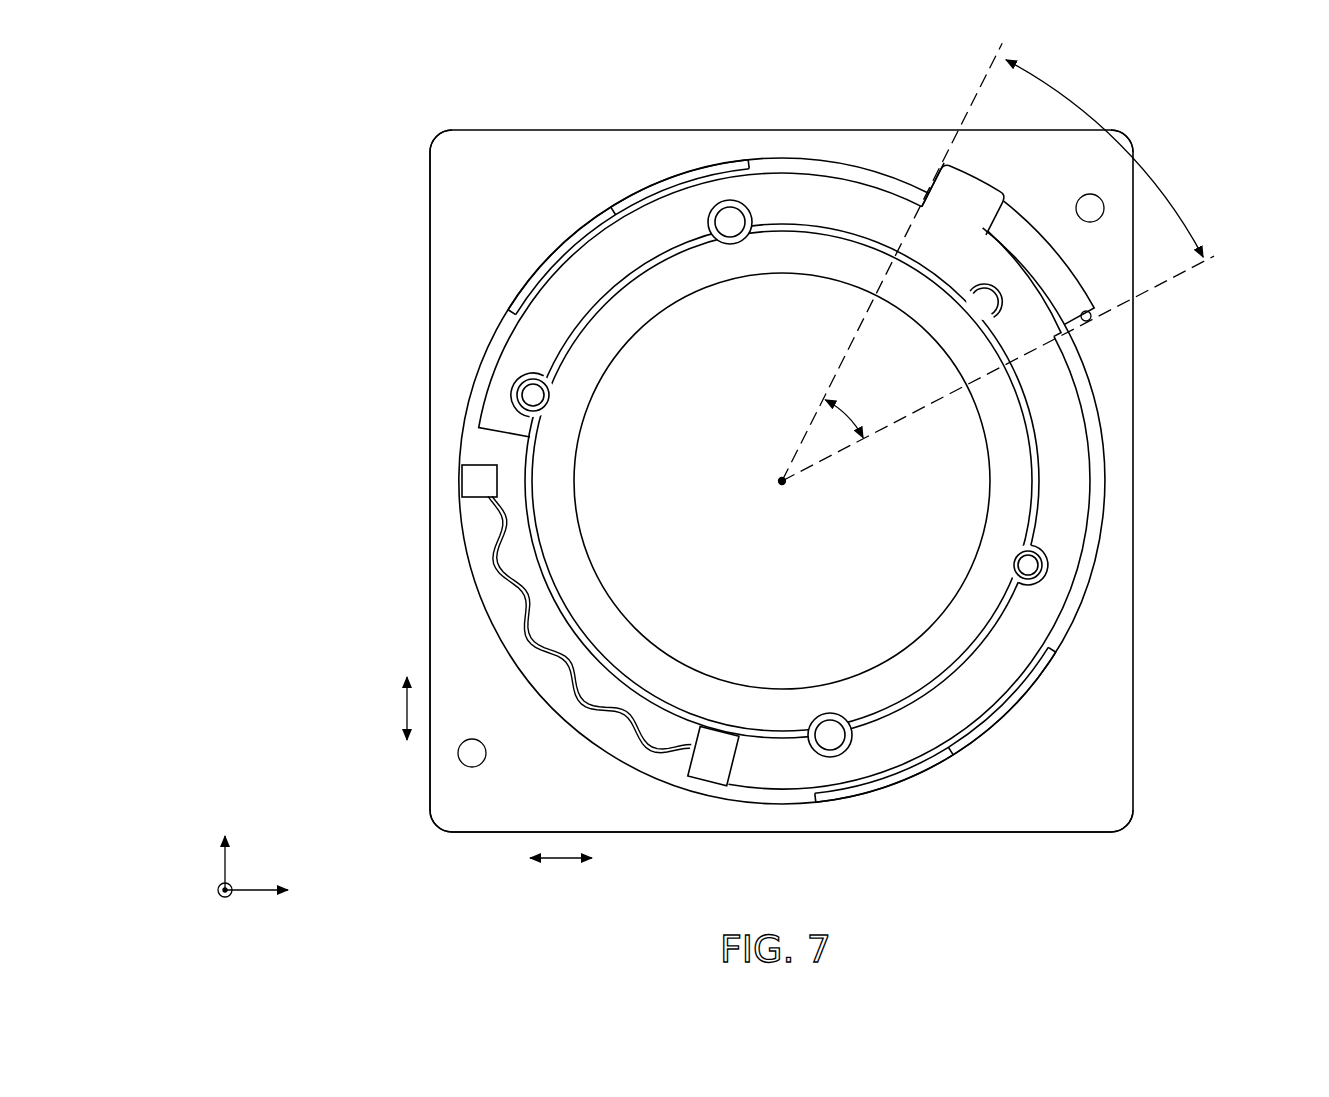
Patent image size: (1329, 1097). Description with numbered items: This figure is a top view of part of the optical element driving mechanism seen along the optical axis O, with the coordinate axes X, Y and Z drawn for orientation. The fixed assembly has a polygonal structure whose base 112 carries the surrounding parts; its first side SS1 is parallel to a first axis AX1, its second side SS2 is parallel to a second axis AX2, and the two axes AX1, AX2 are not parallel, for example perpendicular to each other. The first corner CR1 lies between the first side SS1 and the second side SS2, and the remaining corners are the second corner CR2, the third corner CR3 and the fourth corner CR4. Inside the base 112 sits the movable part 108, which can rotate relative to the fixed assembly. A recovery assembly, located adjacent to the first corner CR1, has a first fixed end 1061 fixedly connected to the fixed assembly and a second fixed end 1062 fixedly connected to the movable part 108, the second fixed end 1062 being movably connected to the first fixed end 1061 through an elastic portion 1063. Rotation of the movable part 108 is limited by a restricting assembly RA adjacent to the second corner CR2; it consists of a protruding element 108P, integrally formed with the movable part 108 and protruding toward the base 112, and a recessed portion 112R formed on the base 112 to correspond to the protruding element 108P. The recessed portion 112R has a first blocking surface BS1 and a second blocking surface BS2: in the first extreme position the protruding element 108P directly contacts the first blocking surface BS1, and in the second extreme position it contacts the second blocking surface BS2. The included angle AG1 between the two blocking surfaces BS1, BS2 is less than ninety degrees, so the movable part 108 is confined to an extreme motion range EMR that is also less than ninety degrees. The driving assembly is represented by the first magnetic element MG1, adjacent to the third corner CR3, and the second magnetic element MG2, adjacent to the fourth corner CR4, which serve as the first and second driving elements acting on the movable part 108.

The base 112 is at (1136, 485).
The movable part 108 is at (1072, 600).
The protruding element 108P is at (984, 196).
The recessed portion 112R is at (1034, 210).
The first blocking surface BS1 is at (1096, 316).
The second blocking surface BS2 is at (928, 184).
The first magnetic element MG1 is at (903, 778).
The second magnetic element MG2 is at (652, 196).
The first fixed end 1061 is at (462, 482).
The second fixed end 1062 is at (711, 760).
The elastic portion 1063 is at (492, 560).
The first corner CR1 is at (429, 830).
The second corner CR2 is at (1134, 134).
The third corner CR3 is at (1133, 831).
The fourth corner CR4 is at (428, 133).
The first side SS1 is at (475, 838).
The second side SS2 is at (407, 629).
The first axis AX1 is at (589, 860).
The second axis AX2 is at (374, 708).
The included angle AG1 is at (862, 410).
The extreme motion range EMR is at (1116, 158).
The restricting assembly RA is at (195, 268).
The optical axis O is at (768, 482).
The X axis X is at (270, 894).
The Y axis Y is at (220, 844).
The Z axis Z is at (212, 894).